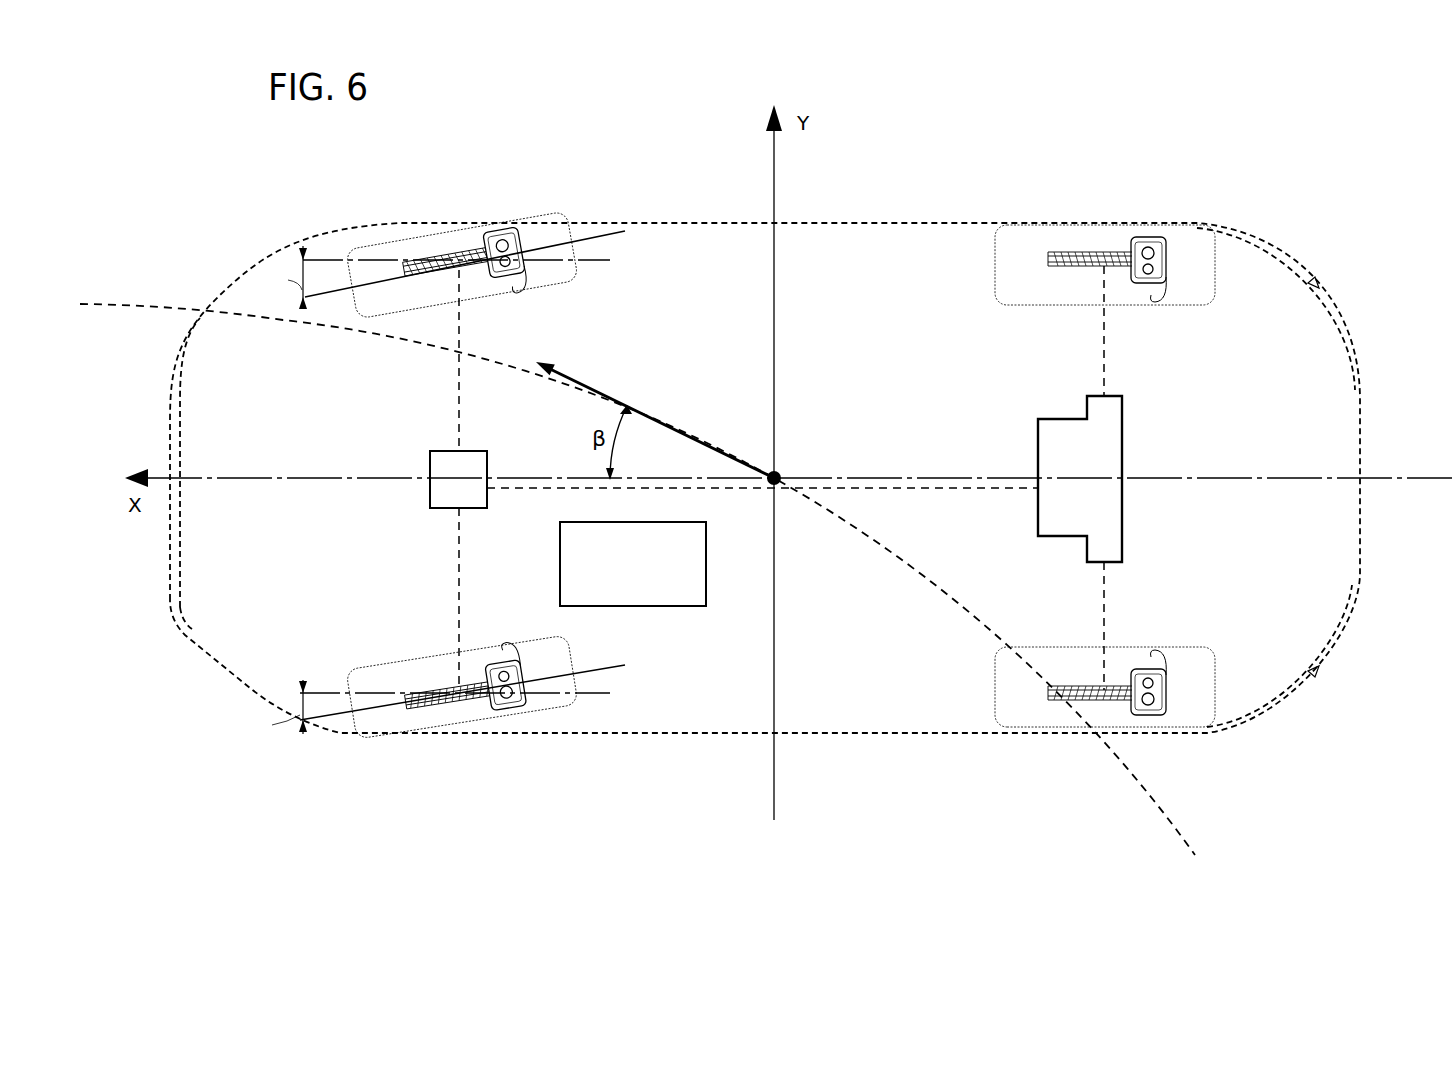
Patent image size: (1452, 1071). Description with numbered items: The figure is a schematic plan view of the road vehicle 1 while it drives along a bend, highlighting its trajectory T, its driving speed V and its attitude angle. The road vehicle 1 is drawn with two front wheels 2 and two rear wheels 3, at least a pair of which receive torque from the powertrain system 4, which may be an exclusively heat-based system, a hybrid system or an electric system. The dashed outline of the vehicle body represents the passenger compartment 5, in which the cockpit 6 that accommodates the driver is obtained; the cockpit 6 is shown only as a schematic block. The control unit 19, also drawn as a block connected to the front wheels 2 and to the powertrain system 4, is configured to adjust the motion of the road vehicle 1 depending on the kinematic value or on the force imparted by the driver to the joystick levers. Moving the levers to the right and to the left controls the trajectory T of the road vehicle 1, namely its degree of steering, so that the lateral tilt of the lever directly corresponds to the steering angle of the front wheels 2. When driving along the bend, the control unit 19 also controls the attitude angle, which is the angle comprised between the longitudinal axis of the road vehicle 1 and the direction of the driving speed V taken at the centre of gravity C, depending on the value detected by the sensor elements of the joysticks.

The road vehicle 1 is at (636, 147).
The front wheels 2 is at (360, 248).
The rear wheels 3 is at (1195, 243).
The powertrain system 4 is at (1124, 456).
The passenger compartment 5 is at (848, 268).
The cockpit 6 is at (635, 575).
The control unit 19 is at (471, 490).
The trajectory T is at (126, 305).
The centre of gravity C is at (781, 471).
The driving speed V is at (616, 358).